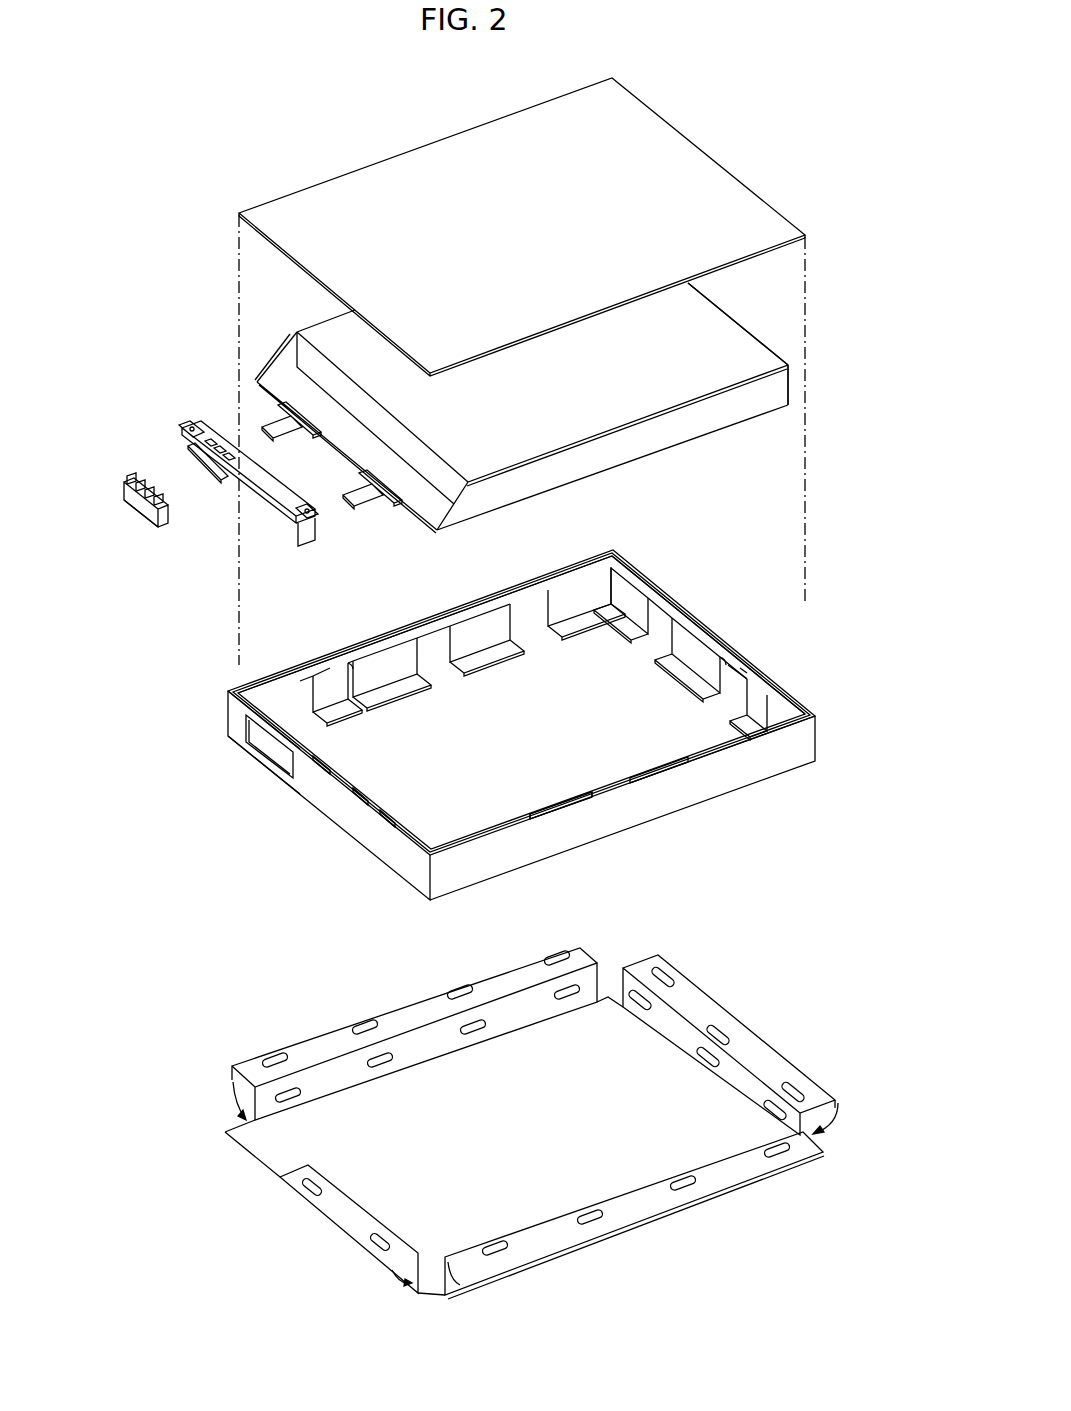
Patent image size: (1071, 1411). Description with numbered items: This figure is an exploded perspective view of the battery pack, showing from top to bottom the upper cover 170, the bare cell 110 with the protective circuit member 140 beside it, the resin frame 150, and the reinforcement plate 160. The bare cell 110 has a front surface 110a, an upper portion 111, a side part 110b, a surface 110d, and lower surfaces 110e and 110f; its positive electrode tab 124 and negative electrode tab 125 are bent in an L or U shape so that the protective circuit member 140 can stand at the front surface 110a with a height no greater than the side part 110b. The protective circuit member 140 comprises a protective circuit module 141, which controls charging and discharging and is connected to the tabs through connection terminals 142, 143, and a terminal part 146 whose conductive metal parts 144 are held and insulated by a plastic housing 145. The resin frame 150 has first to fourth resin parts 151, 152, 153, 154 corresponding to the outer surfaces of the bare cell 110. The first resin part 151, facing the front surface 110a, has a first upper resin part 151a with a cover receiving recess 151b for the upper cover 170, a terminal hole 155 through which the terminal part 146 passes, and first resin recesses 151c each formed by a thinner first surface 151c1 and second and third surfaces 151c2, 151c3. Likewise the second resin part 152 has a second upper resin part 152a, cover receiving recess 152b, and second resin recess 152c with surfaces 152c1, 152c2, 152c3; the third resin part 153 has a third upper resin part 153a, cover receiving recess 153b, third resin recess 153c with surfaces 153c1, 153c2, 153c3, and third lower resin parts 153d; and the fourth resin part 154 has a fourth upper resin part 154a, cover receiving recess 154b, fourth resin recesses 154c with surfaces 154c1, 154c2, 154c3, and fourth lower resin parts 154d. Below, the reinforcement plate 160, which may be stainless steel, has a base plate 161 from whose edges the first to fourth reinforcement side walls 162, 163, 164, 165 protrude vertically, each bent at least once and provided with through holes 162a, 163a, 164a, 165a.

The upper cover 170 is at (360, 152).
The bare cell 110 is at (262, 333).
The front surface 110a is at (283, 332).
The upper portion 111 is at (265, 362).
The side part 110b is at (672, 435).
The rear surface of battery cell 110d is at (722, 330).
The lower surface 110e is at (722, 428).
The lower surface 110f is at (768, 345).
The positive electrode tab 124 is at (283, 428).
The negative electrode tab 125 is at (345, 497).
The protective circuit member 140 is at (125, 415).
The protective circuit module 141 is at (250, 480).
The connection terminal 142 is at (195, 463).
The connection terminal 143 is at (280, 525).
The metal parts 144 is at (143, 512).
The housing 145 is at (130, 503).
The terminal part 146 is at (104, 548).
The resin frame 150 is at (213, 668).
The first resin part 151 is at (402, 860).
The first upper resin part 151a is at (240, 705).
The cover receiving recess 151b is at (240, 722).
The first resin recess 151c is at (292, 880).
The first surface 151c1 is at (372, 810).
The second surface 151c2 is at (383, 805).
The third surface 151c3 is at (360, 787).
The second resin part 152 is at (768, 758).
The second upper resin part 152a is at (650, 770).
The cover receiving recess 152b is at (705, 753).
The second resin recess 152c is at (540, 918).
The first surface 152c1 is at (542, 818).
The second surface 152c2 is at (547, 813).
The third surface 152c3 is at (533, 822).
The third resin part 153 is at (653, 582).
The third upper resin part 153a is at (687, 627).
The cover receiving recess 153b is at (607, 556).
The third resin recess 153c is at (775, 597).
The first surface 153c1 is at (733, 670).
The second surface 153c2 is at (773, 673).
The third surface 153c3 is at (728, 660).
The third lower resin parts 153d is at (680, 677).
The fourth resin part 154 is at (322, 590).
The fourth upper resin part 154a is at (467, 618).
The cover receiving recess 154b is at (497, 598).
The fourth resin recess 154c is at (399, 644).
The first surface 154c1 is at (333, 672).
The second surface 154c2 is at (355, 660).
The third surface 154c3 is at (310, 665).
The fourth lower resin parts 154d is at (497, 677).
The terminal hole 155 is at (278, 750).
The reinforcement plate 160 is at (265, 1025).
The base plate 161 is at (528, 1062).
The first reinforcement side wall 162 is at (310, 1229).
The through holes 162a is at (308, 1182).
The second reinforcement side wall 163 is at (634, 1215).
The through holes 163a is at (600, 1222).
The third reinforcement side wall 164 is at (730, 1037).
The through holes 164a is at (733, 1035).
The fourth reinforcement side wall 165 is at (414, 1034).
The through holes 165a is at (365, 1025).